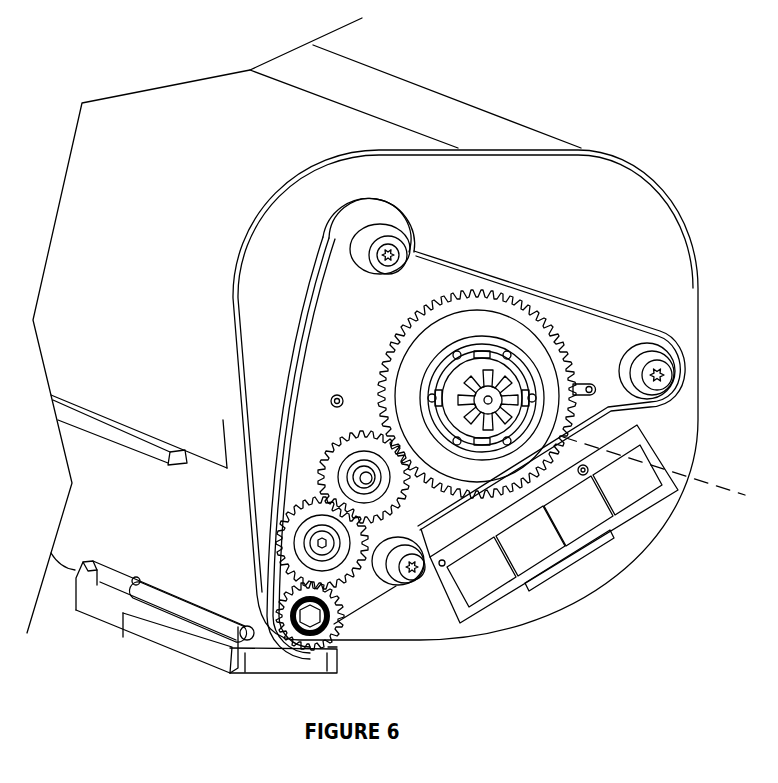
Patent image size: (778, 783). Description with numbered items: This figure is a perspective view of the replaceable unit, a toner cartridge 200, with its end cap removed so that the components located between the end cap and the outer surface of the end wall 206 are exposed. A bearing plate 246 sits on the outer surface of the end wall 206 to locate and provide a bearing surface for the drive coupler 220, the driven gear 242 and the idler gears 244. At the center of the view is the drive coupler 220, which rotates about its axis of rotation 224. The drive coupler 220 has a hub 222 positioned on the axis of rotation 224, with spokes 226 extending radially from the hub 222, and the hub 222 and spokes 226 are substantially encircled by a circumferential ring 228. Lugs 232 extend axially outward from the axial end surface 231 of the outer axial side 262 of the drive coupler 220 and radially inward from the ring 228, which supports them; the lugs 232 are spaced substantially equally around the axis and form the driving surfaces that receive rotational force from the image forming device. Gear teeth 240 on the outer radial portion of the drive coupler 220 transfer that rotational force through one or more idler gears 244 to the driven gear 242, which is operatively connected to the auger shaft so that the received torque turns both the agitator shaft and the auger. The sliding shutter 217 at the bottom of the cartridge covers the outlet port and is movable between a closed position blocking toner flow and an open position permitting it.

The toner cartridge 200 is at (162, 122).
The end wall 206 is at (618, 172).
The bearing plate 246 is at (348, 338).
The gear teeth 240 is at (463, 293).
The drive coupler 220 is at (500, 327).
The hub 222 is at (507, 360).
The outer axial side 262 is at (545, 368).
The circumferential ring 228 is at (440, 357).
The axial end surface 231 is at (422, 387).
The lugs 232 is at (433, 427).
The spokes 226 is at (502, 401).
The idler gears 244 is at (330, 463).
The driven gear 242 is at (333, 630).
The sliding shutter 217 is at (187, 642).
The axis of rotation 224 is at (716, 482).